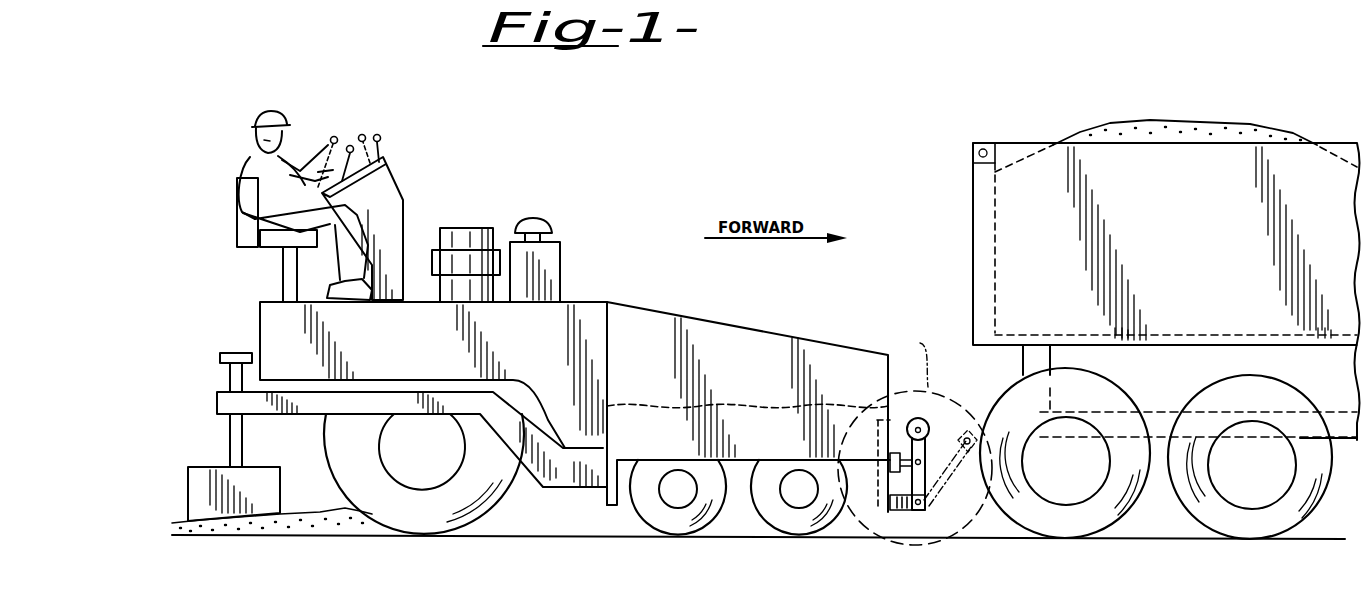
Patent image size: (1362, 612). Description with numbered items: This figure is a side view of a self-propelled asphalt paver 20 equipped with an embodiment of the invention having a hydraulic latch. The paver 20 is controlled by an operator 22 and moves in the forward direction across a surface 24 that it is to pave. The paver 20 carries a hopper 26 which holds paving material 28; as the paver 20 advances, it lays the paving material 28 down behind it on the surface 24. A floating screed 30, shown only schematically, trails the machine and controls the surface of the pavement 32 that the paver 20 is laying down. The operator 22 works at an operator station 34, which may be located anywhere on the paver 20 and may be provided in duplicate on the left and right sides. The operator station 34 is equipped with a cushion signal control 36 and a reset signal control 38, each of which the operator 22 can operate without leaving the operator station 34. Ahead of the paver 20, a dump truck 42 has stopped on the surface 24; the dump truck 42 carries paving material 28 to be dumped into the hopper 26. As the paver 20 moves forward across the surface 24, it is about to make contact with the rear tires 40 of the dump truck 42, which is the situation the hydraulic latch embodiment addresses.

The self-propelled asphalt paver 20 is at (605, 186).
The operator 22 is at (245, 167).
The surface 24 is at (1333, 537).
The hopper 26 is at (740, 323).
The paving material 28 is at (773, 407).
The floating screed 30 is at (213, 467).
The pavement 32 is at (177, 522).
The operator station 34 is at (383, 157).
The cushion signal control 36 is at (343, 131).
The reset signal control 38 is at (369, 129).
The rear tires 40 is at (1010, 398).
The dump truck 42 is at (1228, 86).